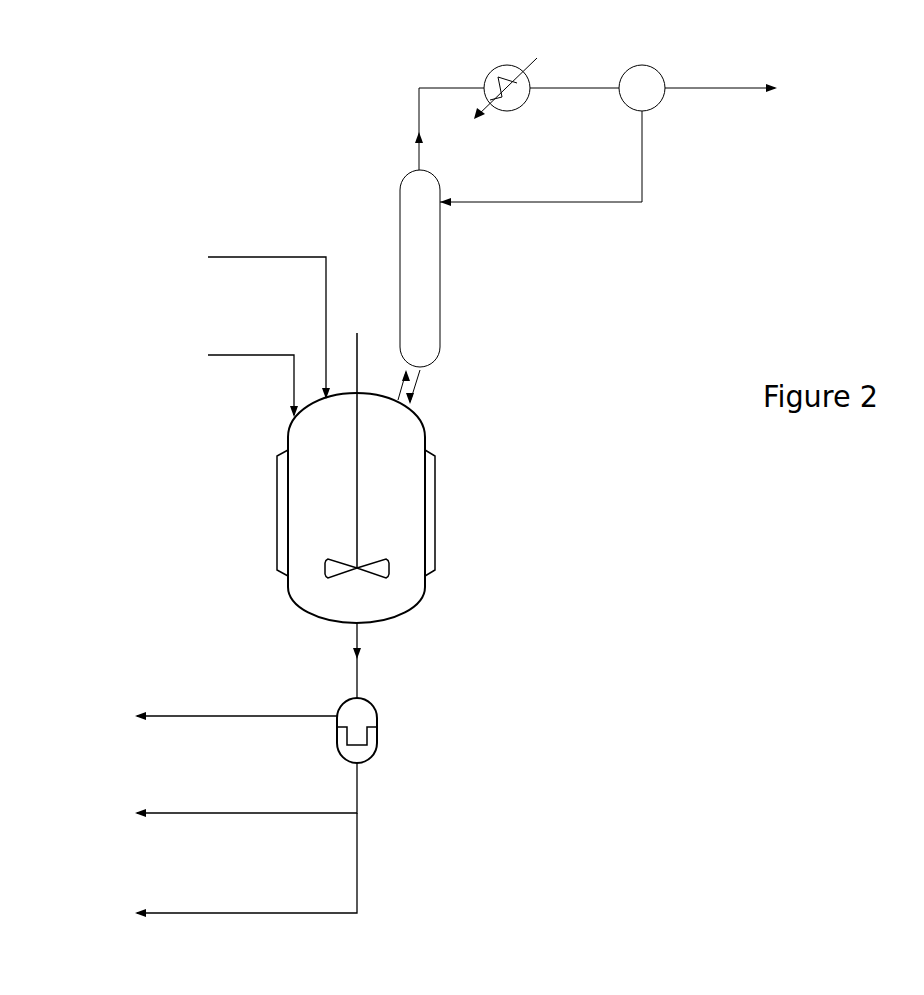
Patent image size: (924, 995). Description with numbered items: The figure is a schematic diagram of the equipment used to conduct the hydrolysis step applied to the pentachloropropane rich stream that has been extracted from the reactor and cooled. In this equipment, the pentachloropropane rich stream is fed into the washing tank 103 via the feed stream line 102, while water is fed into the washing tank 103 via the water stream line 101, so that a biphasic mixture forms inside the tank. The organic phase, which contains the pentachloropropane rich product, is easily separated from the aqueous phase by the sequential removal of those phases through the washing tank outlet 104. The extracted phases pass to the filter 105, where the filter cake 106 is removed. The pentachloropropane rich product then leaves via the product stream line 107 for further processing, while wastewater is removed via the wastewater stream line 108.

The water stream 101 is at (270, 253).
The 1,1,1,2,3-pentachloropropane-rich feed stream 102 is at (270, 352).
The washing tank 103 is at (399, 524).
The washing tank outlet 104 is at (352, 675).
The filter 105 is at (413, 737).
The filter cake 106 is at (223, 712).
The 1,1,1,2,3-pentachloropropane-rich product stream 107 is at (223, 810).
The wastewater stream 108 is at (223, 910).